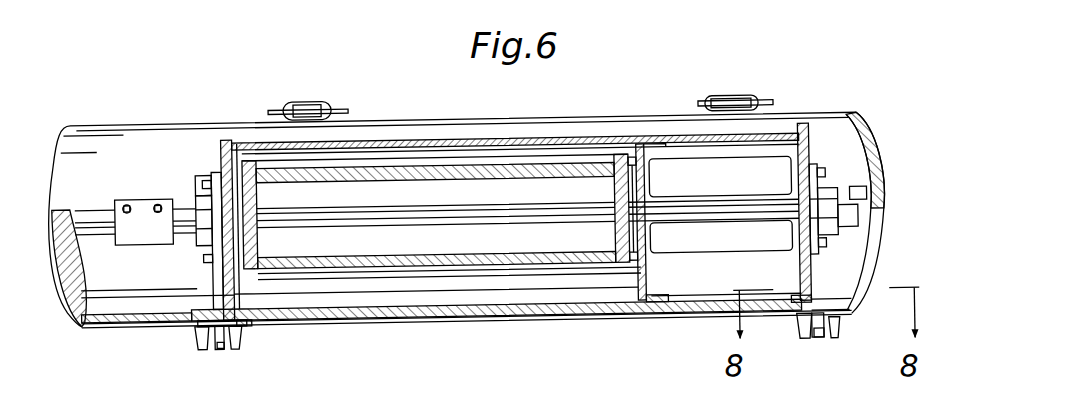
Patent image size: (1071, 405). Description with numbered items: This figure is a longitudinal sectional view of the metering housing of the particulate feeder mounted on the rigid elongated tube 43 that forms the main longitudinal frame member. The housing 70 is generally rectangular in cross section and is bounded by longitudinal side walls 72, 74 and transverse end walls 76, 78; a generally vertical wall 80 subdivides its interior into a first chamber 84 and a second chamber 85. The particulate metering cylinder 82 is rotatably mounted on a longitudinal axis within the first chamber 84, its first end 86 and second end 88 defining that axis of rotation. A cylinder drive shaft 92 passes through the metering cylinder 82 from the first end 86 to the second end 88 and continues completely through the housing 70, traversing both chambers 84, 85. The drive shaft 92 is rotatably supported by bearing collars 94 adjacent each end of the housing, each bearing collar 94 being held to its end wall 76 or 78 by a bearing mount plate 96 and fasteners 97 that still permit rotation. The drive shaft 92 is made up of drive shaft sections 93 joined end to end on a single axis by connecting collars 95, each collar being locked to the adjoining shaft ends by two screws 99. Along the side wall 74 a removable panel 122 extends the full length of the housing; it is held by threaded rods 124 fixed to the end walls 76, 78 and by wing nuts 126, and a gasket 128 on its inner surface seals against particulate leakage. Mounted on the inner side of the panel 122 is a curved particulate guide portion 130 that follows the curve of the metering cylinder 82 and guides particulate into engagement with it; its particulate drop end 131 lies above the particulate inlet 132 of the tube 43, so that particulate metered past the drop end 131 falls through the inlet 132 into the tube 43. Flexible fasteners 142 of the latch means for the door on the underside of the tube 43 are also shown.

The elongated tube 43 is at (150, 132).
The housing 70 is at (503, 133).
The longitudinal side wall 72 is at (422, 140).
The longitudinal side wall 74 is at (447, 328).
The transverse end wall 76 is at (813, 137).
The transverse end wall 78 is at (226, 136).
The vertical wall 80 is at (646, 278).
The particulate metering cylinder 82 is at (578, 170).
The first chamber 84 is at (195, 236).
The second chamber 85 is at (716, 284).
The first end 86 is at (228, 178).
The second end 88 is at (650, 190).
The cylinder drive shaft 92 is at (481, 203).
The drive shaft section 93 is at (90, 210).
The bearing collar 94 is at (192, 187).
The connecting collar 95 is at (173, 274).
The bearing mount plate 96 is at (216, 262).
The fastener 97 is at (207, 177).
The screw 99 is at (128, 200).
The removable panel 122 is at (515, 319).
The threaded rod 124 is at (218, 346).
The wing nut 126 is at (195, 336).
The gasket 128 is at (247, 323).
The curved particulate guide portion 130 is at (368, 287).
The particulate drop end 131 is at (256, 198).
The particulate inlet 132 is at (238, 153).
The flexible fastener 142 is at (332, 104).